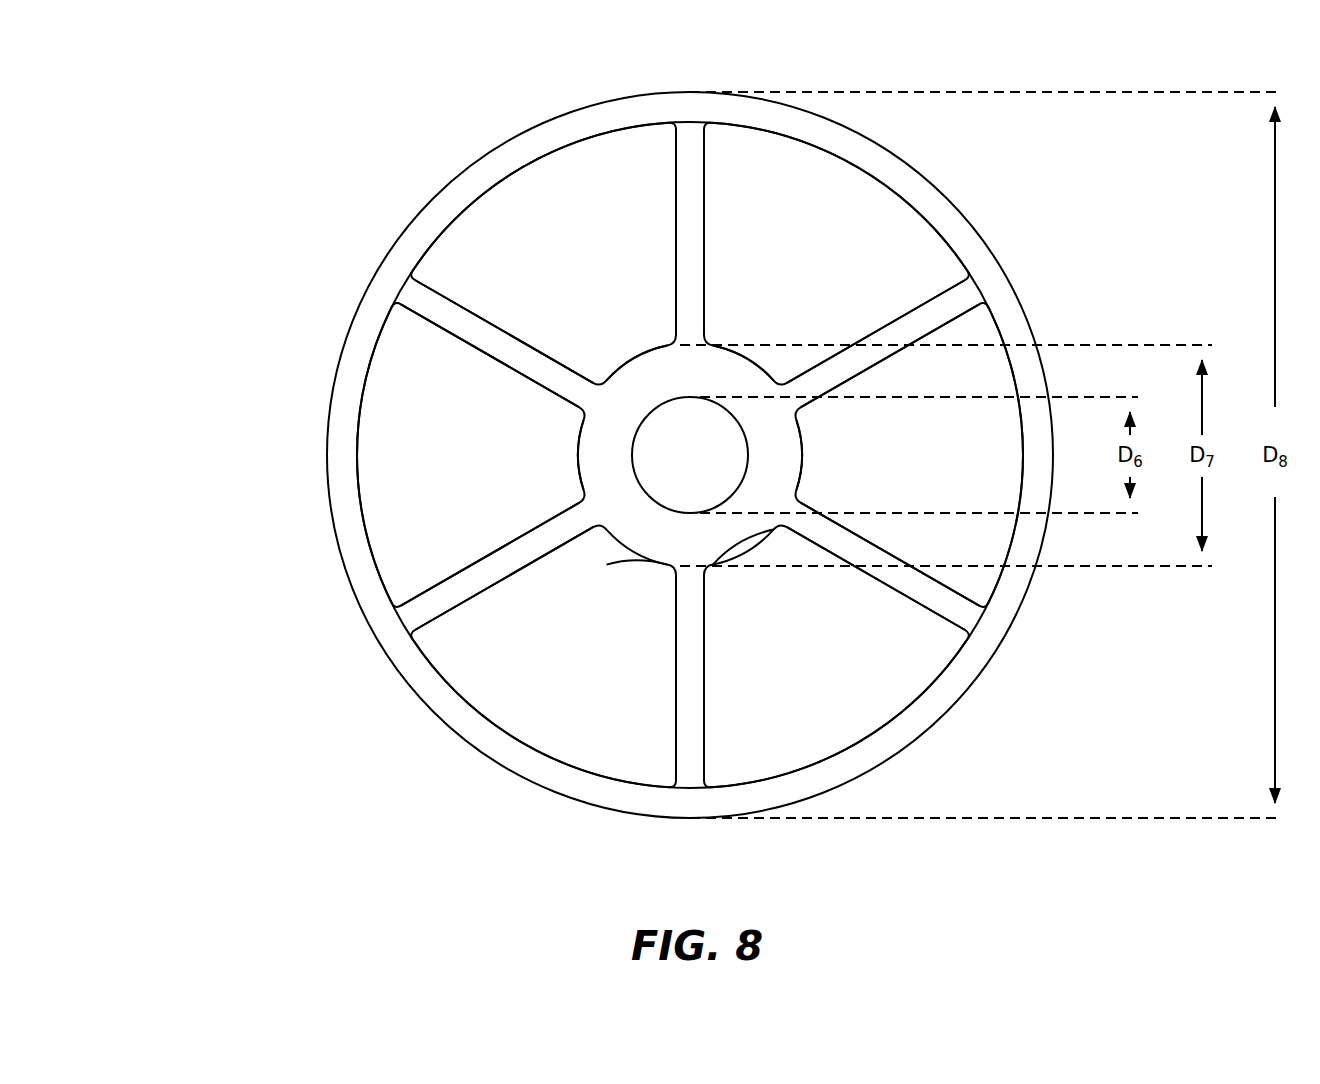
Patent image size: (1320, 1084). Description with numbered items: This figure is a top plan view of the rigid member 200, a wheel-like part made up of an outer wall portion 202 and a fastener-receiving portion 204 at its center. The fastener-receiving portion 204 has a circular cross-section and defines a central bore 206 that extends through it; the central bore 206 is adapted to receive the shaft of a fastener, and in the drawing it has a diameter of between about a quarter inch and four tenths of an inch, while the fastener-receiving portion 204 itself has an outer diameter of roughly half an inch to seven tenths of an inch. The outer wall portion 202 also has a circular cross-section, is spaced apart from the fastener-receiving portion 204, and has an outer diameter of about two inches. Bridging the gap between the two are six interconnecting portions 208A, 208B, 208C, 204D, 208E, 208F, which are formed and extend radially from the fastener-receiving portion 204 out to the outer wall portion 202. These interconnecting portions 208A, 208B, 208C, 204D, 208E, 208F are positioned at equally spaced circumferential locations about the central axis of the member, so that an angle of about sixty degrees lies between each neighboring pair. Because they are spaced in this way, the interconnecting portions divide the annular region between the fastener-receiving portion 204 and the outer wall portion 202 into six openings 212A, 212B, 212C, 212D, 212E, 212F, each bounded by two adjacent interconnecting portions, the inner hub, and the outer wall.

The rigid member 200 is at (244, 119).
The outer wall portion 202 is at (873, 163).
The fastener-receiving portion 204 is at (602, 493).
The central bore 206 is at (684, 437).
The interconnecting portion 208A is at (686, 147).
The interconnecting portion 208B is at (945, 305).
The interconnecting portion 208C is at (945, 603).
The spoke 204D is at (692, 730).
The interconnecting portion 208E is at (430, 603).
The interconnecting portion 208F is at (430, 306).
The opening 212A is at (836, 254).
The opening 212B is at (909, 455).
The opening 212C is at (836, 656).
The opening 212D is at (543, 656).
The opening 212E is at (471, 455).
The opening 212F is at (543, 254).